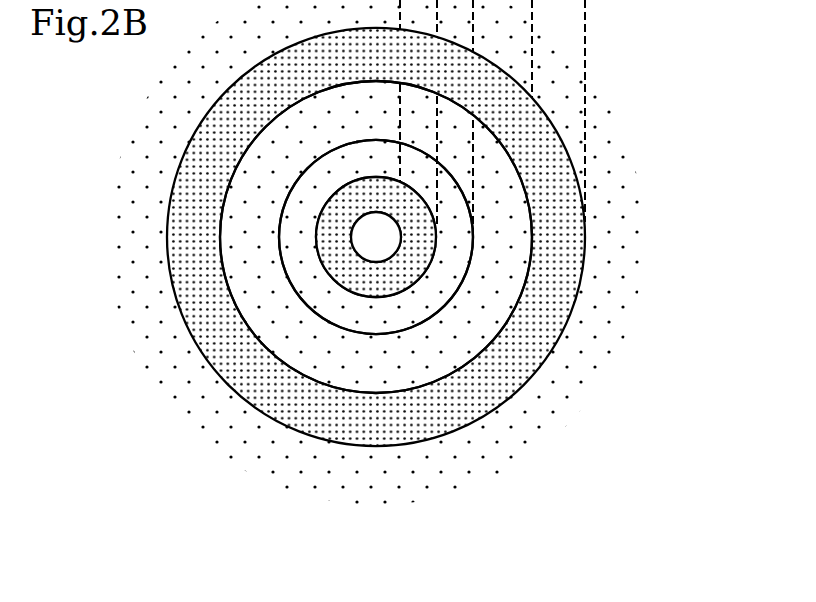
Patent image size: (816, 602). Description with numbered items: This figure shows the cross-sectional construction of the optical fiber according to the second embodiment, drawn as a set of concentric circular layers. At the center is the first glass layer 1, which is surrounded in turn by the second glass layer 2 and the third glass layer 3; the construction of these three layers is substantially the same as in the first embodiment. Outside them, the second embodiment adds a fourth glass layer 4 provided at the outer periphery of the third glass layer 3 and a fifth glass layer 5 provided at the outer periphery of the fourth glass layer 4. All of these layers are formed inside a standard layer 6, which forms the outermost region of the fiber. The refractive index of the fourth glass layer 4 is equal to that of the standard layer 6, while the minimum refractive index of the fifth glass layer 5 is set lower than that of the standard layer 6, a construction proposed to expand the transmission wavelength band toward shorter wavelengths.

The first glass layer 1 is at (368, 247).
The second glass layer 2 is at (353, 275).
The third glass layer 3 is at (400, 312).
The fourth glass layer 4 is at (468, 322).
The fifth glass layer 5 is at (550, 306).
The standard layer 6 is at (602, 153).